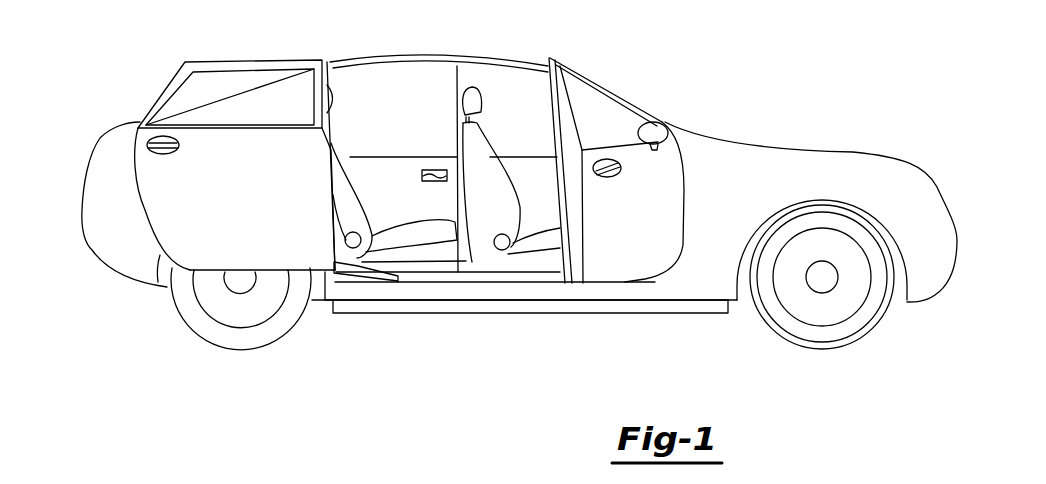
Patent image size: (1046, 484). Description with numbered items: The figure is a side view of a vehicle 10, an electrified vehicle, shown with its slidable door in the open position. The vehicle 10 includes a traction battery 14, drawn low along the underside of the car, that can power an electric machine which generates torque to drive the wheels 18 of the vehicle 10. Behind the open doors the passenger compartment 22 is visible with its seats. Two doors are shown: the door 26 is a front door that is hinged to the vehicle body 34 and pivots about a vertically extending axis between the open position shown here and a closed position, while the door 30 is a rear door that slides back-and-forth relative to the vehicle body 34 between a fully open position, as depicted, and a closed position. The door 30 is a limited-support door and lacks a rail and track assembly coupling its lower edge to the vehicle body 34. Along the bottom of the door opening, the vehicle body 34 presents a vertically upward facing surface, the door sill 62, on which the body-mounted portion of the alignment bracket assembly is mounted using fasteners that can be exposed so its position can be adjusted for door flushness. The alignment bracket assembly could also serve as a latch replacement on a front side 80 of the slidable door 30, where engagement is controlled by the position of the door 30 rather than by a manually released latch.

The vehicle 10 is at (767, 96).
The traction battery 14 is at (532, 313).
The wheels 18 is at (853, 338).
The passenger compartment 22 is at (429, 119).
The door 26 is at (622, 243).
The door 30 is at (180, 195).
The vehicle body 34 is at (452, 293).
The door sill 62 is at (400, 279).
The front side 80 is at (332, 155).